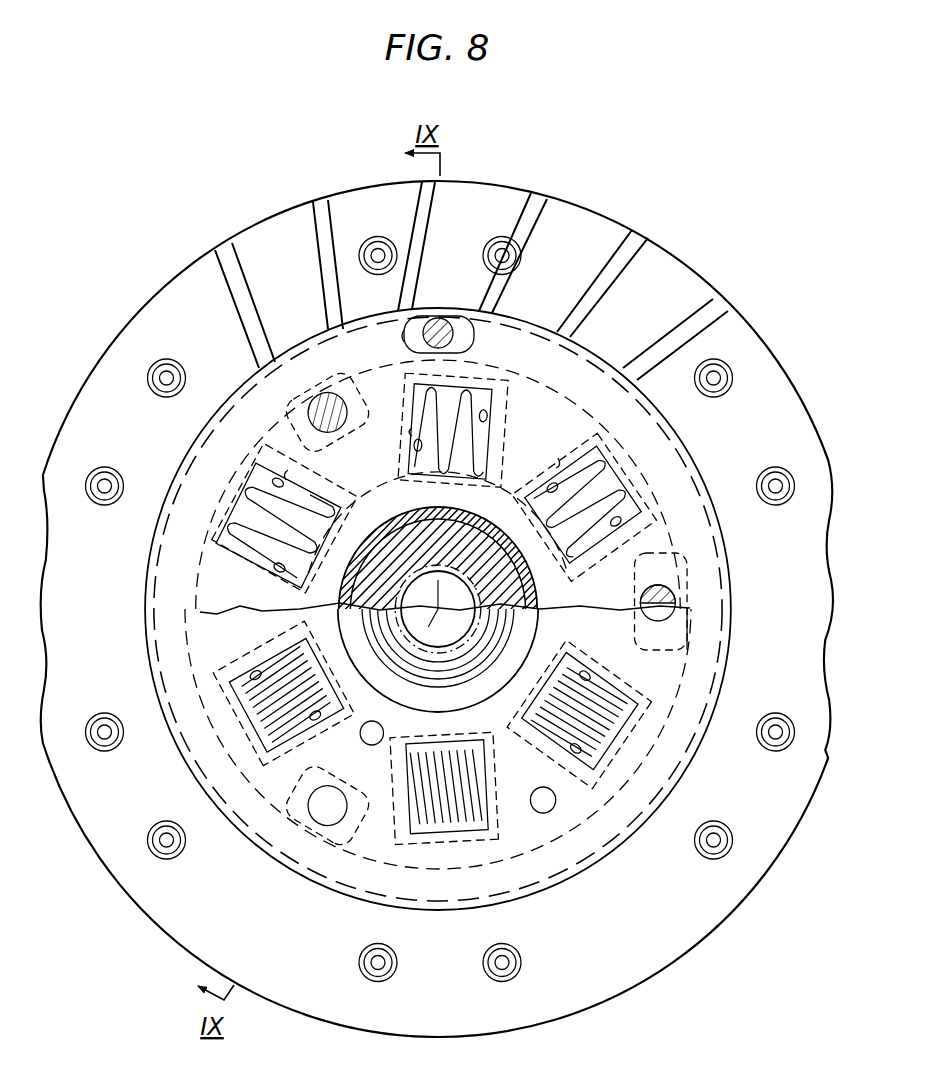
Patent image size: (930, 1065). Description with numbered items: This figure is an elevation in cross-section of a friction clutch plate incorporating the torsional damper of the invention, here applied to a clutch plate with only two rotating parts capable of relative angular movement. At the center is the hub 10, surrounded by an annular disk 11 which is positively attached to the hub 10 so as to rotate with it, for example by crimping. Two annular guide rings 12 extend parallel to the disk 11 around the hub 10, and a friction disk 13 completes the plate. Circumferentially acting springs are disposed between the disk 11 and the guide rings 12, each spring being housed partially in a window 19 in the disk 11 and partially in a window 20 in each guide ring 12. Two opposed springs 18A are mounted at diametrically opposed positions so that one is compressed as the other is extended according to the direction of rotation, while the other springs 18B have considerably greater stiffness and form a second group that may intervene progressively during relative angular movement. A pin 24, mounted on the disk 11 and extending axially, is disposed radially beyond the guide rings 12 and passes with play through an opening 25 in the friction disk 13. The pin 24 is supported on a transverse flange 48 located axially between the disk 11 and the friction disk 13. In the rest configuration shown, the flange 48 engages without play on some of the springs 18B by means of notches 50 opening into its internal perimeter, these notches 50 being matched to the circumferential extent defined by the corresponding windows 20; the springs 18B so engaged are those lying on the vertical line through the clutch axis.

The hub 10 is at (487, 672).
The annular disk 11 is at (198, 520).
The annular guide ring 12 is at (235, 578).
The friction disk 13 is at (640, 230).
The opposed spring 18A is at (528, 495).
The second group spring 18B is at (336, 500).
The window in disk 19 is at (406, 390).
The window in guide ring 20 is at (494, 414).
The pin 24 is at (440, 318).
The opening 25 is at (490, 330).
The transverse flange 48 is at (405, 332).
The notch 50 is at (412, 432).